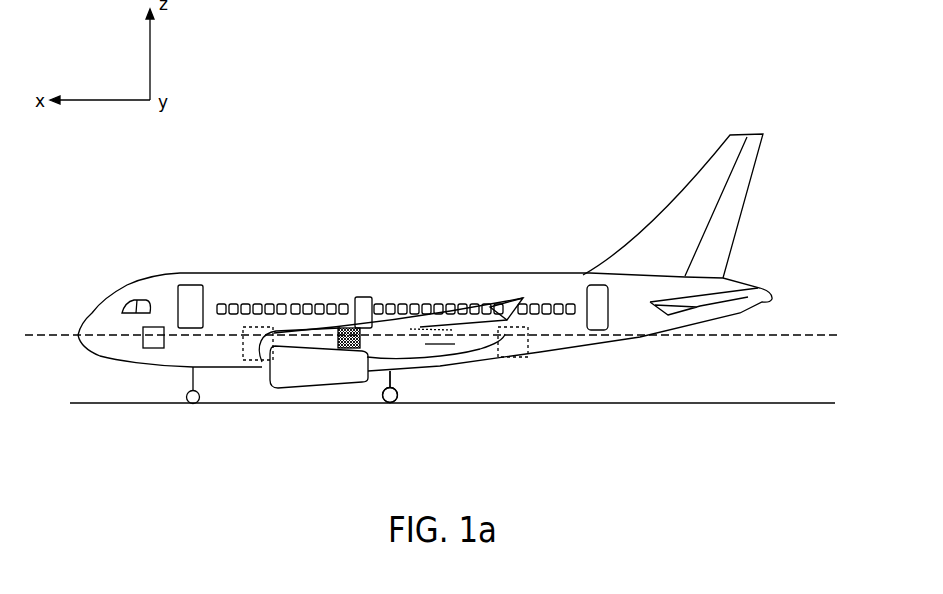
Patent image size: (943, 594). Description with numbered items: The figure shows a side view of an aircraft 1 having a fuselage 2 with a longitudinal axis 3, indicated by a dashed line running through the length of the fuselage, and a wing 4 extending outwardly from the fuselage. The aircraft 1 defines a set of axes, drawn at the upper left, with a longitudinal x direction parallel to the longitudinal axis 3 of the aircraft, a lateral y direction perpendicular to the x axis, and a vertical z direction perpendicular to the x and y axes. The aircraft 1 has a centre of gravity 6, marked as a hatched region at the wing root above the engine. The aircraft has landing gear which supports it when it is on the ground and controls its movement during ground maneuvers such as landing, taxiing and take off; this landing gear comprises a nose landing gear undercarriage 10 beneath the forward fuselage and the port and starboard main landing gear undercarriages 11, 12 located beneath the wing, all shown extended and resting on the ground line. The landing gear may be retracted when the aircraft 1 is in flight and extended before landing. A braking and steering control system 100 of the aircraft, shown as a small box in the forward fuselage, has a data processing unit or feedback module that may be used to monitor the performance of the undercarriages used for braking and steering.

The aircraft 1 is at (118, 265).
The fuselage 2 is at (490, 287).
The longitudinal axis 3 is at (788, 335).
The wing 4 is at (420, 322).
The centre of gravity 6 is at (350, 327).
The nose landing gear undercarriage 10 is at (187, 377).
The port main landing gear undercarriage 11 is at (395, 378).
The starboard main landing gear undercarriage 12 is at (453, 408).
The braking and steering control system 100 is at (153, 349).